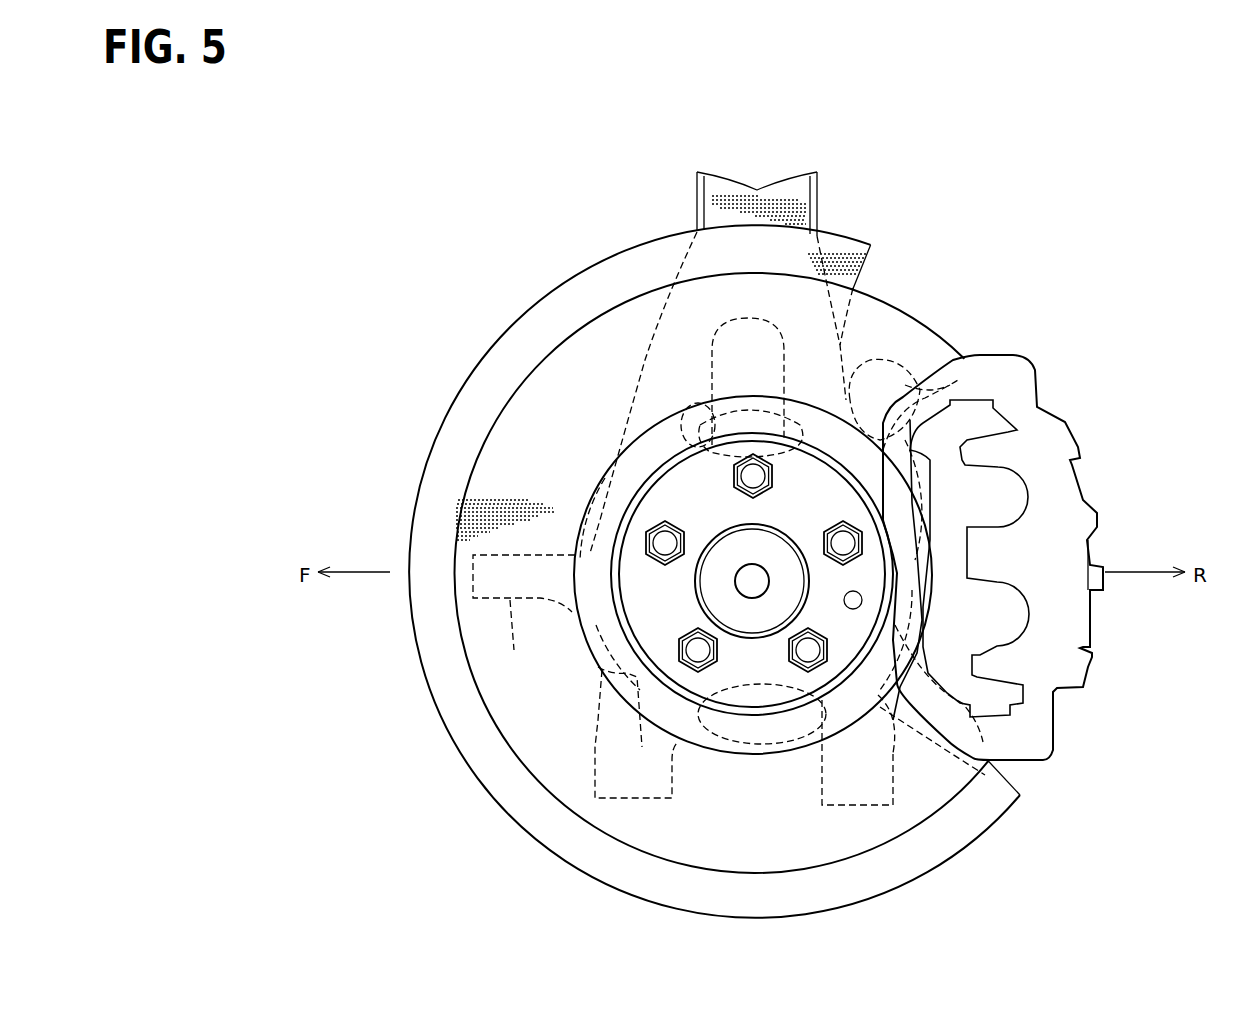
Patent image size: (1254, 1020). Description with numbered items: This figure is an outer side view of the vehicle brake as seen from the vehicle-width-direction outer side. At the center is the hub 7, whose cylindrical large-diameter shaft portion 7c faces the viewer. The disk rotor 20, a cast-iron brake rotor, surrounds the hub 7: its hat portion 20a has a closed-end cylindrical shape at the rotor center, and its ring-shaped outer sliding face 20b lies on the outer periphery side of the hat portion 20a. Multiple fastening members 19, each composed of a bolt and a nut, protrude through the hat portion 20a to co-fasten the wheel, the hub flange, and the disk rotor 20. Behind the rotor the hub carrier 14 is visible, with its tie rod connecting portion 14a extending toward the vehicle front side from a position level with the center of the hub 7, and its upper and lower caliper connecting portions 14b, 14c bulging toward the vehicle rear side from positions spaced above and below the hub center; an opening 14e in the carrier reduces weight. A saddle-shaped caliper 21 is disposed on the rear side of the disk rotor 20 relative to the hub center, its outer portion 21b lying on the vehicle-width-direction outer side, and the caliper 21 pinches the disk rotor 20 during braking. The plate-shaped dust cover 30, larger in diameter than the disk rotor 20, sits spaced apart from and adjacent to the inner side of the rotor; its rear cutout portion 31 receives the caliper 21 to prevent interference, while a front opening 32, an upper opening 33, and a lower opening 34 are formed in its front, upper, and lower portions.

The hub carrier 14 is at (820, 195).
The tie rod connecting portion 14a is at (524, 615).
The upper caliper connecting portion 14b is at (938, 388).
The lower caliper connecting portion 14c is at (968, 740).
The opening 14e is at (757, 326).
The fastening members 19 is at (733, 478).
The disk rotor 20 is at (500, 410).
The hat portion 20a is at (653, 622).
The outer sliding face 20b is at (512, 465).
The caliper 21 is at (1065, 487).
The outer portion 21b is at (1062, 538).
The dust cover 30 is at (526, 298).
The cutout portion 31 is at (899, 399).
The front opening 32 is at (636, 732).
The upper opening 33 is at (680, 412).
The lower opening 34 is at (848, 722).
The hub 7 is at (769, 522).
The large-diameter shaft portion 7c is at (790, 547).